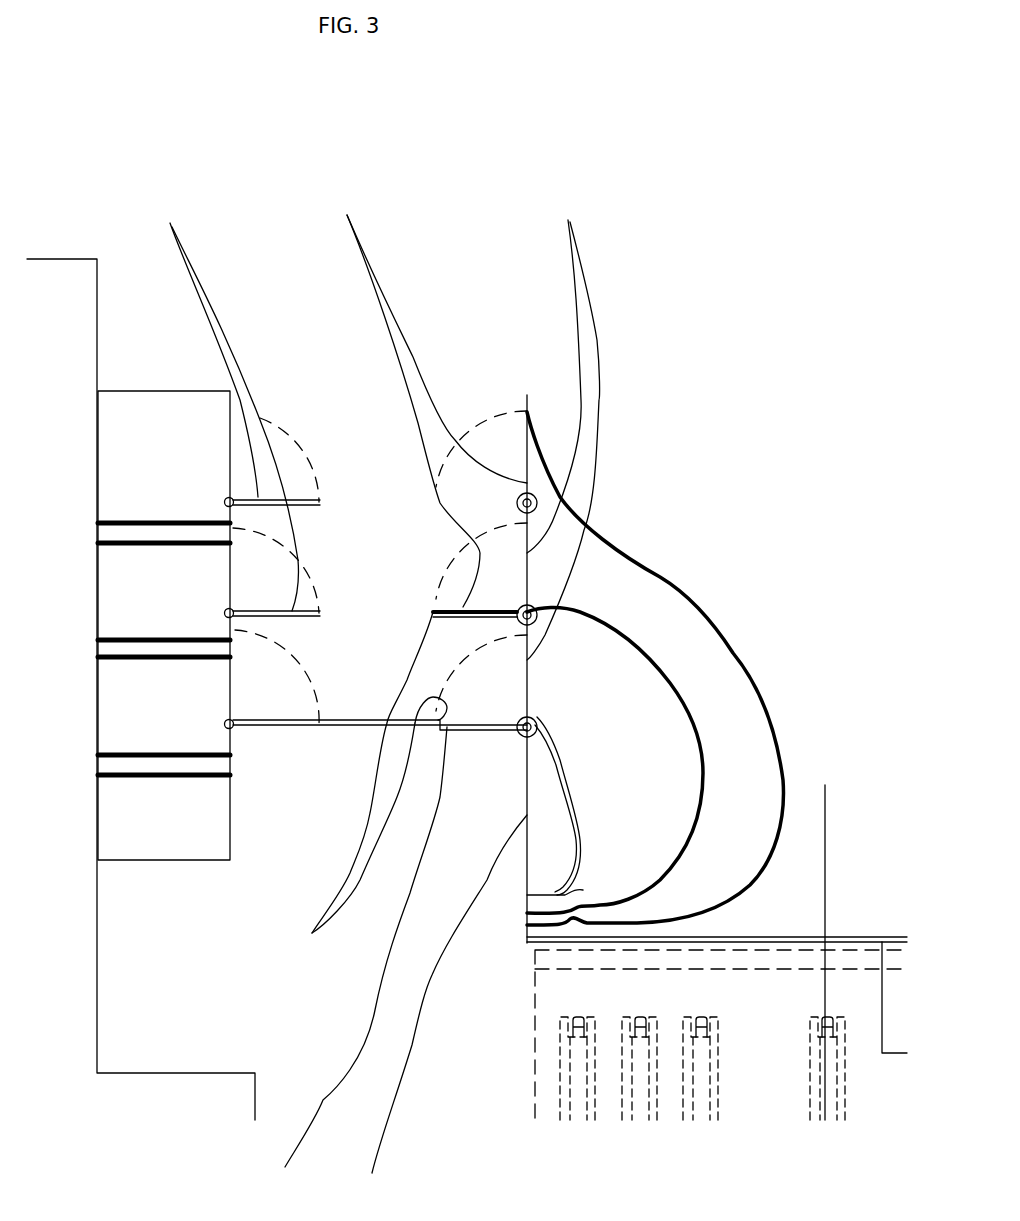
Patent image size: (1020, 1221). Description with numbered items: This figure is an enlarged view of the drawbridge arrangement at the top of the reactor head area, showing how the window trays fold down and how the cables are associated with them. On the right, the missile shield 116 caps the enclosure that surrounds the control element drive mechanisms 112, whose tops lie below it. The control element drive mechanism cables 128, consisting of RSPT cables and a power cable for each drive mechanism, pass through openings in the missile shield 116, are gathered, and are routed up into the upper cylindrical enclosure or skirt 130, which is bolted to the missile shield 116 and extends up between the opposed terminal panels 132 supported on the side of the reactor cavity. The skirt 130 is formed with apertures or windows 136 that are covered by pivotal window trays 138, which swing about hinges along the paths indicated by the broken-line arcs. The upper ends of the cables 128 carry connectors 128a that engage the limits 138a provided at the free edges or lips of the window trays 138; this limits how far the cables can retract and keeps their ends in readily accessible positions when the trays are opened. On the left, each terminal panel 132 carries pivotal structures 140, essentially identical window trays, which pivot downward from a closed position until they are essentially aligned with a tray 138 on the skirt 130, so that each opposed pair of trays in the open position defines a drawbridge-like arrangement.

The control element drive mechanisms 112 is at (640, 1122).
The missile shield 116 is at (552, 943).
The control element drive mechanism cables 128 is at (637, 553).
The connectors 128a is at (433, 612).
The upper cylindrical enclosure or skirt 130 is at (439, 1009).
The terminal panels 132 is at (165, 391).
The apertures or windows 136 is at (563, 426).
The window trays 138 is at (397, 698).
The limits 138a is at (349, 819).
The pivotal structures (window trays) 140 is at (223, 402).